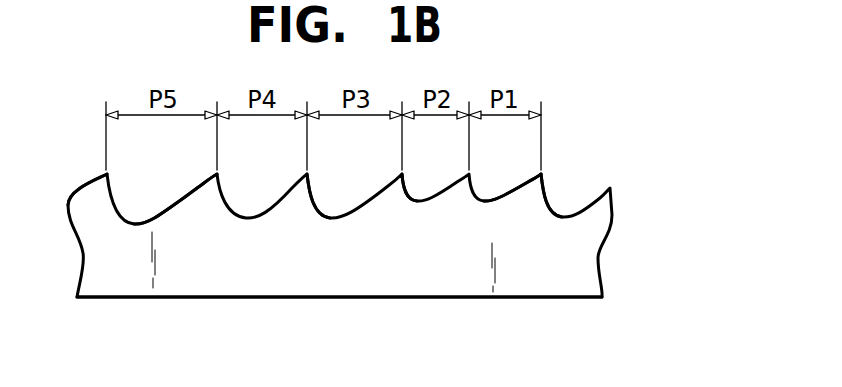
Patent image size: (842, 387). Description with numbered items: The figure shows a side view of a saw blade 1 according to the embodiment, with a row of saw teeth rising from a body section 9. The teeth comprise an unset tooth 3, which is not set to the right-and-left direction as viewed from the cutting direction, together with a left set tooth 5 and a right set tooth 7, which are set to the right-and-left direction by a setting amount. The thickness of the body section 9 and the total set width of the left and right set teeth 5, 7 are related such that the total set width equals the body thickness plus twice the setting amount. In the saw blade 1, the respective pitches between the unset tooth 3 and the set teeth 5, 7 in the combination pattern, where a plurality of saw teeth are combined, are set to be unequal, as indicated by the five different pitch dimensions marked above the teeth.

The saw blade 1 is at (606, 155).
The unset tooth 3 is at (298, 185).
The left set tooth 5 is at (212, 185).
The right set tooth 7 is at (98, 187).
The body section 9 is at (305, 280).